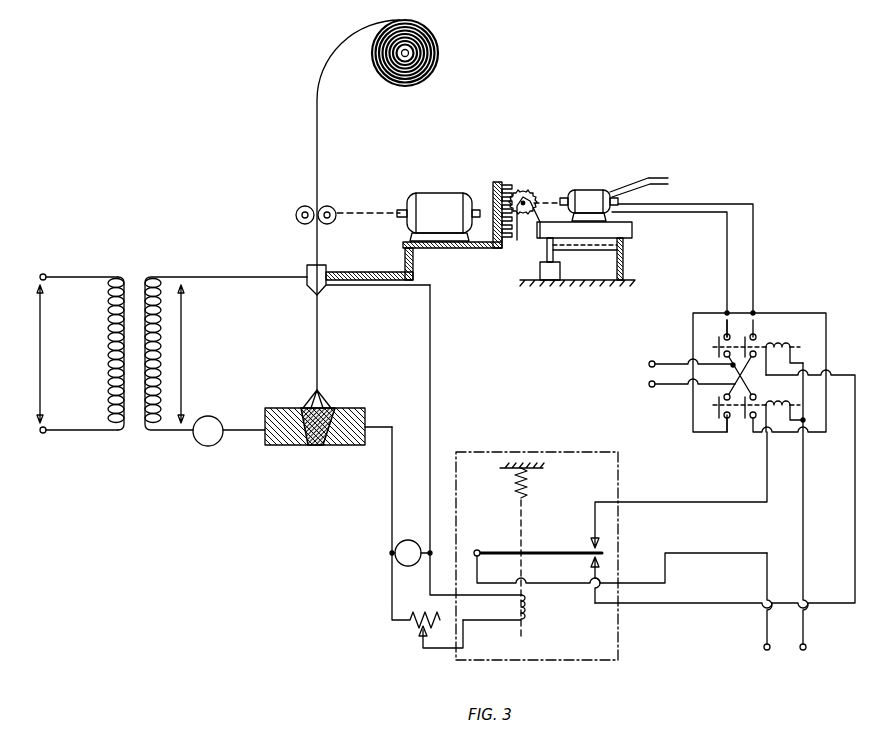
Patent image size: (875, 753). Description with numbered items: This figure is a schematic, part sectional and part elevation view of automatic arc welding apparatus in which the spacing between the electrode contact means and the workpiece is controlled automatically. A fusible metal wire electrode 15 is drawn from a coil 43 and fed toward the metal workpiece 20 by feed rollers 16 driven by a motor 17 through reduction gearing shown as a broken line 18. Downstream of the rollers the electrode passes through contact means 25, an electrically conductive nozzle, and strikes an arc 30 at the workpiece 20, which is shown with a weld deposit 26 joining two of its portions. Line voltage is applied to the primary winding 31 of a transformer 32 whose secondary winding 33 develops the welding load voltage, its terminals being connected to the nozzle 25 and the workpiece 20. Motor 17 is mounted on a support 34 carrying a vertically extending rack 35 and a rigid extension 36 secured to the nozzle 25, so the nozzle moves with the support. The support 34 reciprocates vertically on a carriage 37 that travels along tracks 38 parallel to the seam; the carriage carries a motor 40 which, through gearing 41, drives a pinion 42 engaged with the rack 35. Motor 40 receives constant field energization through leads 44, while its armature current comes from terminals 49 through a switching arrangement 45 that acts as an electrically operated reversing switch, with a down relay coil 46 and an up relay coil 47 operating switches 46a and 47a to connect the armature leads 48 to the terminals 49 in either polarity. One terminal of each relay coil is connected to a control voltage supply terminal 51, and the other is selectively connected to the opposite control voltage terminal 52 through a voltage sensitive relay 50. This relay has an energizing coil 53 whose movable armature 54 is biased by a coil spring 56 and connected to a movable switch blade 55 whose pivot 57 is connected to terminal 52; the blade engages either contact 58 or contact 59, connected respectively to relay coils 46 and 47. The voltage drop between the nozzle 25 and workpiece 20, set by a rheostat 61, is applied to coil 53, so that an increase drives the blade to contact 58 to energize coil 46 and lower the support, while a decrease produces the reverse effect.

The fusible metal wire electrode 15 is at (320, 150).
The feed rollers 16 is at (319, 205).
The motor 17 is at (437, 212).
The reduction gearing 18 is at (351, 212).
The metal workpiece 20 is at (285, 446).
The contact means 25 is at (309, 274).
The weld deposit 26 is at (330, 420).
The arc 30 is at (310, 399).
The primary winding 31 is at (108, 305).
The transformer 32 is at (118, 262).
The secondary winding 33 is at (160, 292).
The support 34 is at (473, 250).
The rack 35 is at (501, 182).
The rigid extension 36 is at (362, 272).
The carriage 37 is at (633, 231).
The tracks 38 is at (540, 272).
The motor 40 is at (589, 192).
The gearing 41 is at (546, 195).
The pinion 42 is at (526, 192).
The coil 43 is at (440, 49).
The leads 44 is at (652, 177).
The switching arrangement 45 is at (768, 304).
The down relay coil 46 is at (778, 345).
The switch 46a is at (738, 345).
The up relay coil 47 is at (777, 404).
The switch 47a is at (738, 420).
The armature leads 48 is at (755, 257).
The terminals 49 is at (649, 382).
The voltage sensitive relay 50 is at (540, 453).
The control voltage supply terminal 51 is at (803, 650).
The control voltage terminal 52 is at (765, 651).
The energizing coil 53 is at (528, 612).
The movable armature 54 is at (526, 538).
The movable switch blade 55 is at (556, 556).
The coil spring 56 is at (531, 491).
The pivot 57 is at (477, 549).
The contact 58 is at (601, 566).
The contact 59 is at (600, 548).
The rheostat 61 is at (416, 628).